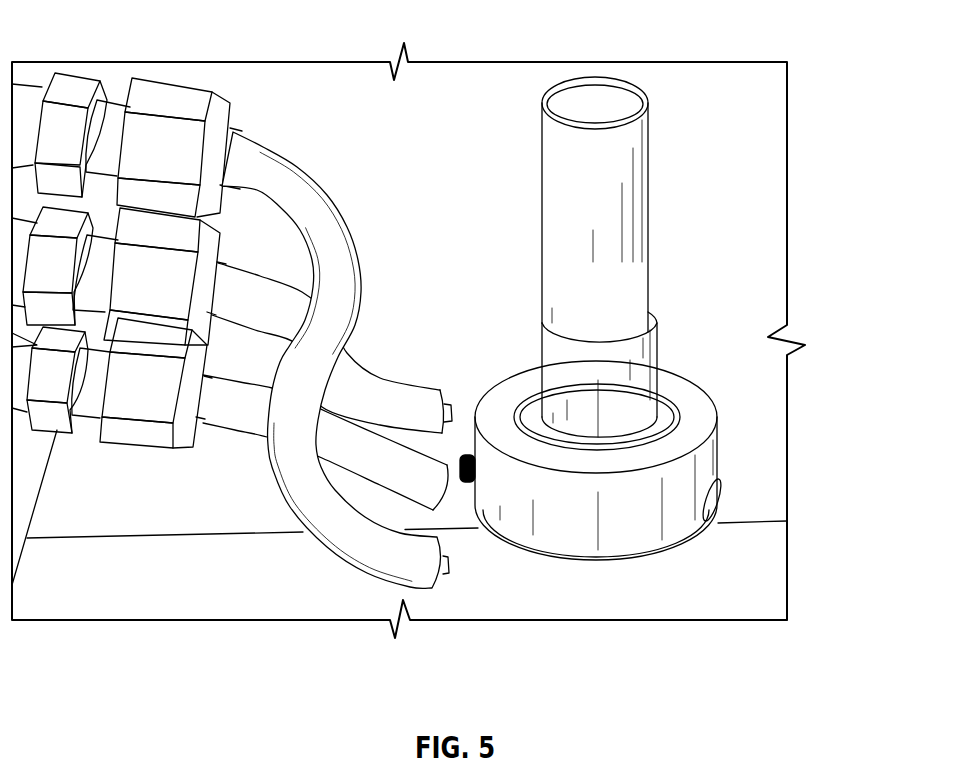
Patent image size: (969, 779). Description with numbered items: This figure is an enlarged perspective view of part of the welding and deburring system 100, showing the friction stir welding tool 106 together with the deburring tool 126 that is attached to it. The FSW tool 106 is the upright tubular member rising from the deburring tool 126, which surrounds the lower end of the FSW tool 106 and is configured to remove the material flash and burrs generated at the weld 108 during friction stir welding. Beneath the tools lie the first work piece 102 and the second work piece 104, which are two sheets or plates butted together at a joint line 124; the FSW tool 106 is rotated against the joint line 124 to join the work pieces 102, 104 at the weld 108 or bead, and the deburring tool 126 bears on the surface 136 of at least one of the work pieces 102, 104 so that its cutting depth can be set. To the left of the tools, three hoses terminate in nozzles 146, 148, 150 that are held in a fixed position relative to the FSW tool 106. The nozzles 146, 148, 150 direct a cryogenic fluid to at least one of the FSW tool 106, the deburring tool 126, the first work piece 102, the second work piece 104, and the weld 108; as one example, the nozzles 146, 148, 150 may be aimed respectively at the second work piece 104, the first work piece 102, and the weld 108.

The welding and deburring system 100 is at (112, 38).
The first work piece 102 is at (760, 465).
The second work piece 104 is at (760, 597).
The friction stir welding tool 106 is at (647, 178).
The weld 108 is at (467, 511).
The joint line 124 is at (760, 522).
The deburring tool 126 is at (690, 383).
The surface 136 is at (760, 558).
The nozzle 146 is at (267, 470).
The nozzle 148 is at (403, 385).
The nozzle 150 is at (247, 377).